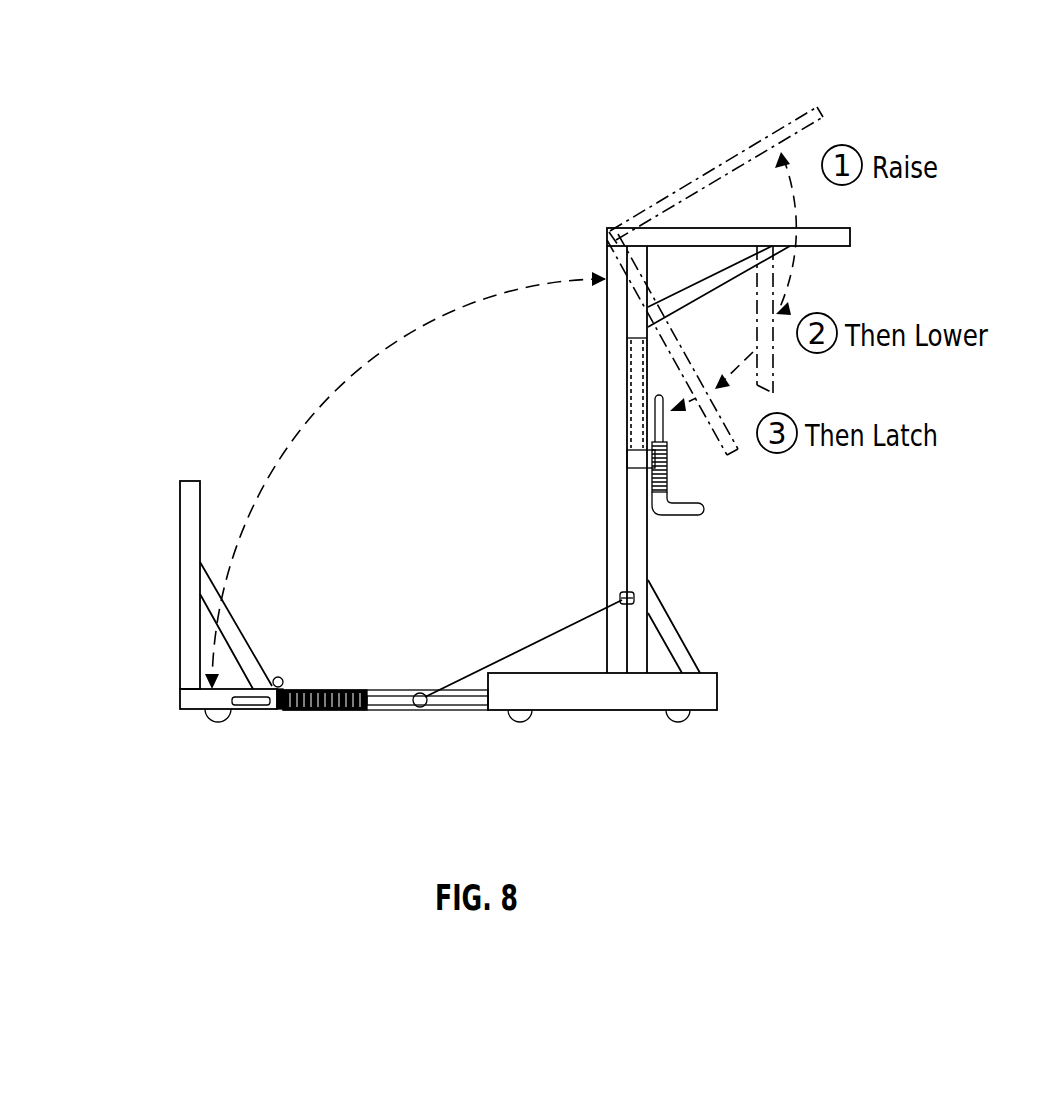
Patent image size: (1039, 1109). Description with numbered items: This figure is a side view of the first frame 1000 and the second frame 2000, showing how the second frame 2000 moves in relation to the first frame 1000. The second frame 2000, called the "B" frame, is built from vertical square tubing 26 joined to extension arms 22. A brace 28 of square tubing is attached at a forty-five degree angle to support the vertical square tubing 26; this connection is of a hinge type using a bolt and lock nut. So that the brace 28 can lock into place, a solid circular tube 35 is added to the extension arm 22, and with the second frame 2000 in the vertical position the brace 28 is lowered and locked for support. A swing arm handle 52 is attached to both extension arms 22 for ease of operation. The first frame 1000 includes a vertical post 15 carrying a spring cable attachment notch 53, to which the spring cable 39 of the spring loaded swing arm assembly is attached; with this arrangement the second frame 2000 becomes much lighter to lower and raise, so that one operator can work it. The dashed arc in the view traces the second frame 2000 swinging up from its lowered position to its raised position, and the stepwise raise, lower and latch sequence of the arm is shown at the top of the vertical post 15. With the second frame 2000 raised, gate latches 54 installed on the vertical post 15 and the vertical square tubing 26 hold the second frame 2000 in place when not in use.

The second frame 2000 is at (268, 614).
The first frame 1000 is at (563, 506).
The vertical post 15 is at (650, 540).
The extension arm 22 is at (180, 701).
The vertical square tubing 26 is at (190, 562).
The brace 28 is at (236, 626).
The solid circular tube 35 is at (283, 678).
The spring cable 39 is at (553, 630).
The swing arm handle 52 is at (247, 705).
The spring cable attachment notch 53 is at (347, 710).
The gate latch 54 is at (712, 507).